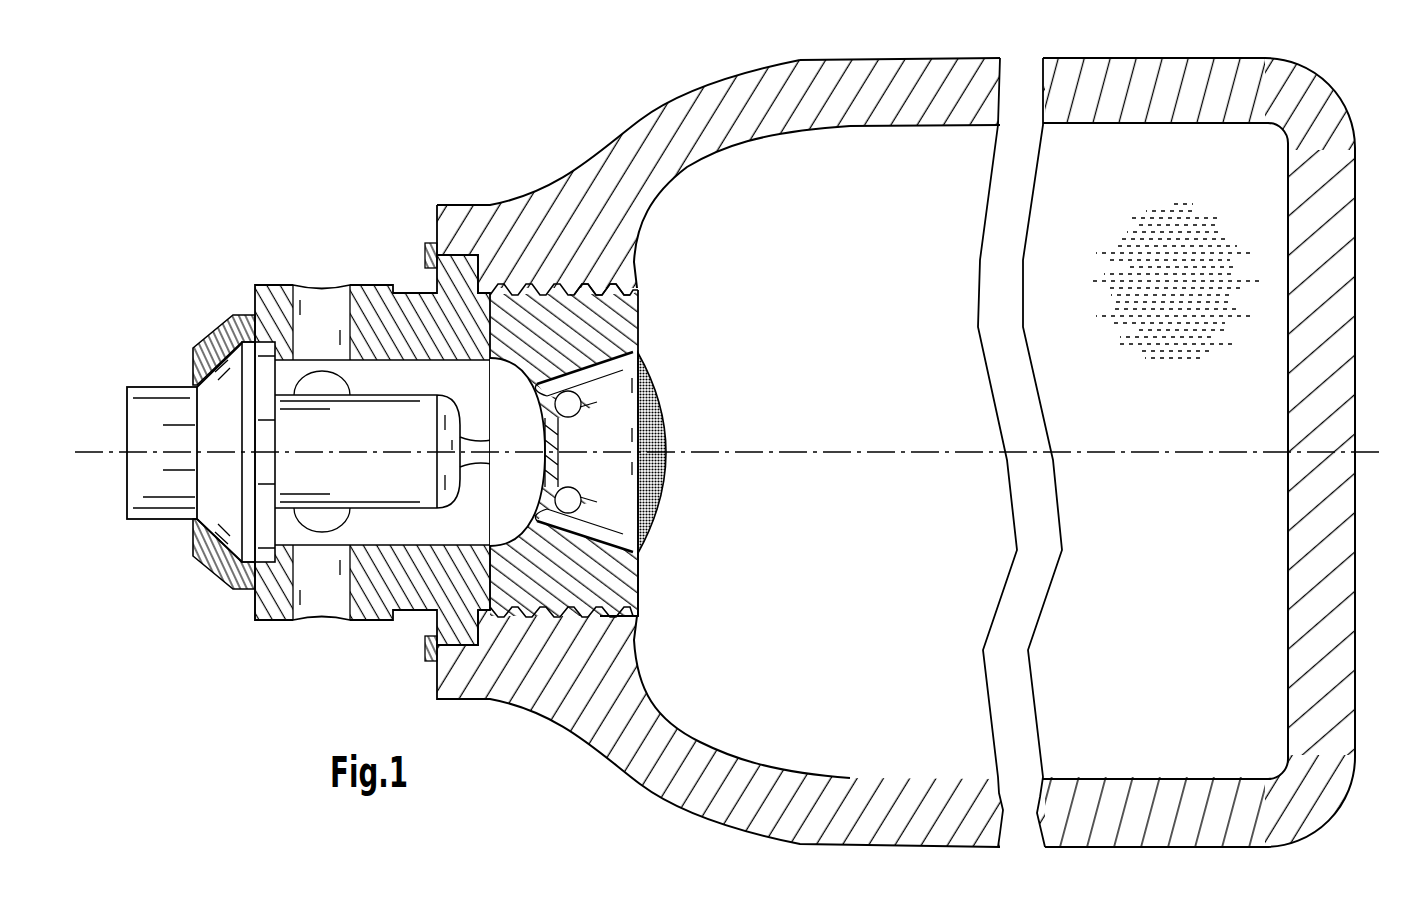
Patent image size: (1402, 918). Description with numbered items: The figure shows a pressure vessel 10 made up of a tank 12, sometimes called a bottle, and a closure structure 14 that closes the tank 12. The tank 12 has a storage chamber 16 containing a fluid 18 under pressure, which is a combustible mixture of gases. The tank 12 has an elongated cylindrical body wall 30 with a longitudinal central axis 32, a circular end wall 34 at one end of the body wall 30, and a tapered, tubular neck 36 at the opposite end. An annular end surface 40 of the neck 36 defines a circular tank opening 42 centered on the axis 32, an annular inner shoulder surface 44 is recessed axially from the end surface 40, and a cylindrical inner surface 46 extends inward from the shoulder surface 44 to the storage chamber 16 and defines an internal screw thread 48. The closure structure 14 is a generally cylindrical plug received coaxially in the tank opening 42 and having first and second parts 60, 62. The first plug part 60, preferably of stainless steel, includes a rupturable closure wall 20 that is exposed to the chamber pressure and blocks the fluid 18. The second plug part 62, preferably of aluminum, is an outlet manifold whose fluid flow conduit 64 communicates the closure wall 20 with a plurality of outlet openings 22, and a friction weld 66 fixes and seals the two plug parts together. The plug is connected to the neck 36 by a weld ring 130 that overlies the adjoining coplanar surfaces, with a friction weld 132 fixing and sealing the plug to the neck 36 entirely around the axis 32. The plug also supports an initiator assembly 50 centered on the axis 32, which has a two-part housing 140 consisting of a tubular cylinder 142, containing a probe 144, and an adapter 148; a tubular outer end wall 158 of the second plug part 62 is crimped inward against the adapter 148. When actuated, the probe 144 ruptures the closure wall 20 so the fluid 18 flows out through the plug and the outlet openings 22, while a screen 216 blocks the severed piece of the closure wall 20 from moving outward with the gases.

The pressure vessel 10 is at (392, 113).
The tank 12 is at (736, 61).
The closure structure 14 is at (256, 274).
The storage chamber 16 is at (791, 244).
The fluid 18 is at (1205, 293).
The closure wall 20 is at (572, 430).
The outlet openings 22 is at (322, 273).
The body wall 30 is at (888, 75).
The longitudinal central axis 32 is at (838, 445).
The end wall 34 is at (1333, 196).
The neck 36 is at (550, 203).
The end surface 40 is at (437, 223).
The tank opening 42 is at (424, 280).
The inner shoulder surface 44 is at (465, 270).
The cylindrical inner surface 46 is at (548, 296).
The internal screw thread 48 is at (593, 293).
The initiator assembly 50 is at (136, 376).
The first plug part 60 is at (650, 618).
The second plug part 62 is at (248, 630).
The fluid flow conduit 64 is at (401, 389).
The friction weld 66 is at (492, 572).
The weld ring 130 is at (428, 640).
The friction weld 132 is at (440, 650).
The housing 140 is at (163, 500).
The cylinder 142 is at (378, 482).
The probe 144 is at (467, 447).
The adapter 148 is at (198, 530).
The outer end wall 158 is at (215, 343).
The screen 216 is at (665, 445).